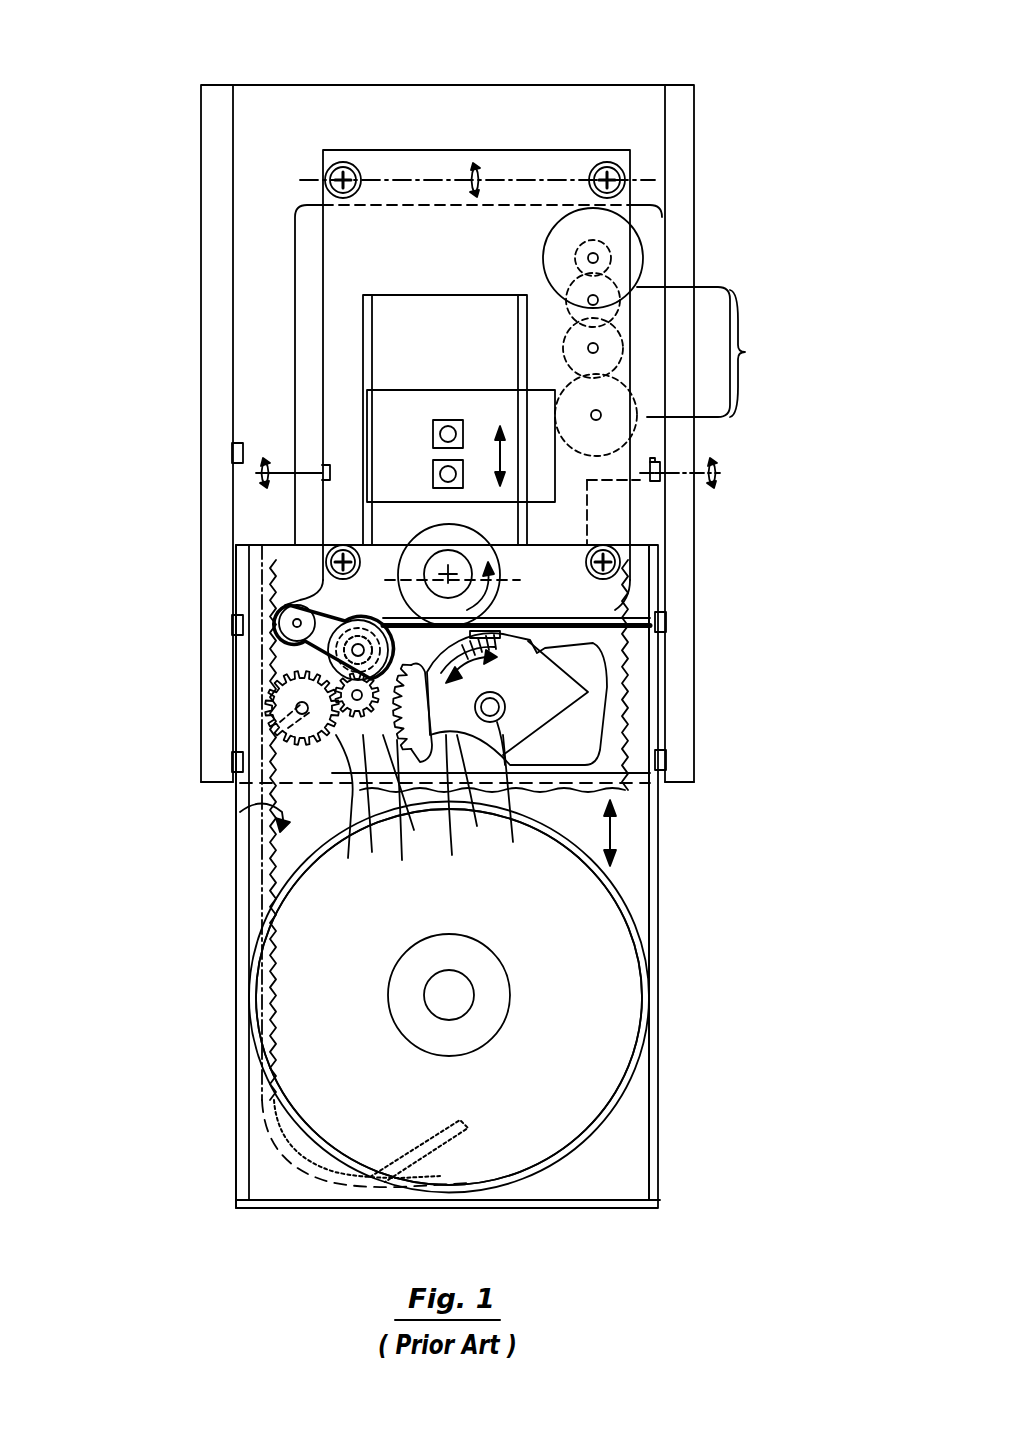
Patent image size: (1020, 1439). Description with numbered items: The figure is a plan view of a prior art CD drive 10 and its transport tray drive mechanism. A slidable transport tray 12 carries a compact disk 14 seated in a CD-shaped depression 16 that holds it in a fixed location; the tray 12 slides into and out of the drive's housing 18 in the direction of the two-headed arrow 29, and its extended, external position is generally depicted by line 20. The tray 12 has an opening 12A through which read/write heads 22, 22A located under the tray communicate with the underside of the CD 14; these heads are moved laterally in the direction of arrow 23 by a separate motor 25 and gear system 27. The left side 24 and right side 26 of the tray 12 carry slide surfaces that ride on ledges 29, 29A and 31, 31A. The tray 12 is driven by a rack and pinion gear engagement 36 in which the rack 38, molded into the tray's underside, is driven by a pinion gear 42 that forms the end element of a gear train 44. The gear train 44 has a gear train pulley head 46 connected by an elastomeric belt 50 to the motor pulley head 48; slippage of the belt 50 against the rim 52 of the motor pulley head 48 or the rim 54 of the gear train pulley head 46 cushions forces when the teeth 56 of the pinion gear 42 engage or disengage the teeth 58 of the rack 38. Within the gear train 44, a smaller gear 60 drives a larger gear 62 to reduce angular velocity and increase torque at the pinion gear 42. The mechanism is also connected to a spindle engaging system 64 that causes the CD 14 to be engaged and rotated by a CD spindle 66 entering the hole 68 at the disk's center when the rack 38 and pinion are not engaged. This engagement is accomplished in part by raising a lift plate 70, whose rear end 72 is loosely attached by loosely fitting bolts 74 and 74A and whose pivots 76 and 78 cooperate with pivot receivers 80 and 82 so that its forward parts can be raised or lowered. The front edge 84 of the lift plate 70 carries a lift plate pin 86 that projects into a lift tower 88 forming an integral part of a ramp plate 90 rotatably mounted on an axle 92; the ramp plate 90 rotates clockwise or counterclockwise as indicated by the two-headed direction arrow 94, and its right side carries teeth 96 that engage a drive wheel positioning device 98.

The CD drive 10 is at (598, 72).
The transport tray 12 is at (630, 866).
The opening 12A is at (262, 820).
The compact disk 14 is at (608, 986).
The CD-shaped depression 16 is at (618, 1097).
The housing 18 is at (200, 366).
The line 20 is at (665, 1206).
The read/write head 22 is at (445, 418).
The read/write head 22A is at (465, 470).
The arrow 23 is at (507, 456).
The left side 24 is at (236, 945).
The motor 25 is at (635, 260).
The right side 26 is at (658, 912).
The gear system 27 is at (745, 352).
The ledge 29 is at (232, 625).
The ledge 29A is at (232, 455).
The ledge 31 is at (667, 760).
The ledge 31A is at (667, 623).
The rack and pinion gear engagement 36 is at (268, 735).
The rack 38 is at (270, 961).
The pinion gear 42 is at (335, 809).
The gear train 44 is at (409, 813).
The gear train pulley head 46 is at (476, 794).
The motor pulley head 48 is at (330, 648).
The belt 50 is at (340, 662).
The rim 52 is at (285, 620).
The rim 54 is at (282, 605).
The teeth 56 is at (350, 702).
The teeth 58 is at (262, 868).
The smaller gear 60 is at (374, 805).
The larger gear 62 is at (392, 760).
The spindle engaging system 64 is at (520, 728).
The CD spindle 66 is at (435, 525).
The hole 68 is at (510, 994).
The lift plate 70 is at (421, 292).
The rear end 72 is at (445, 150).
The bolt 74 is at (333, 168).
The bolt 74A is at (615, 177).
The pivot 76 is at (283, 470).
The pivot 78 is at (663, 480).
The pivot receiver 80 is at (288, 480).
The pivot receiver 82 is at (663, 468).
The front edge 84 is at (535, 618).
The lift plate pin 86 is at (557, 698).
The lift tower 88 is at (443, 622).
The ramp plate 90 is at (628, 720).
The axle 92 is at (514, 801).
The two-headed direction arrow 94 is at (480, 678).
The teeth 96 is at (411, 796).
The drive wheel positioning device 98 is at (457, 806).